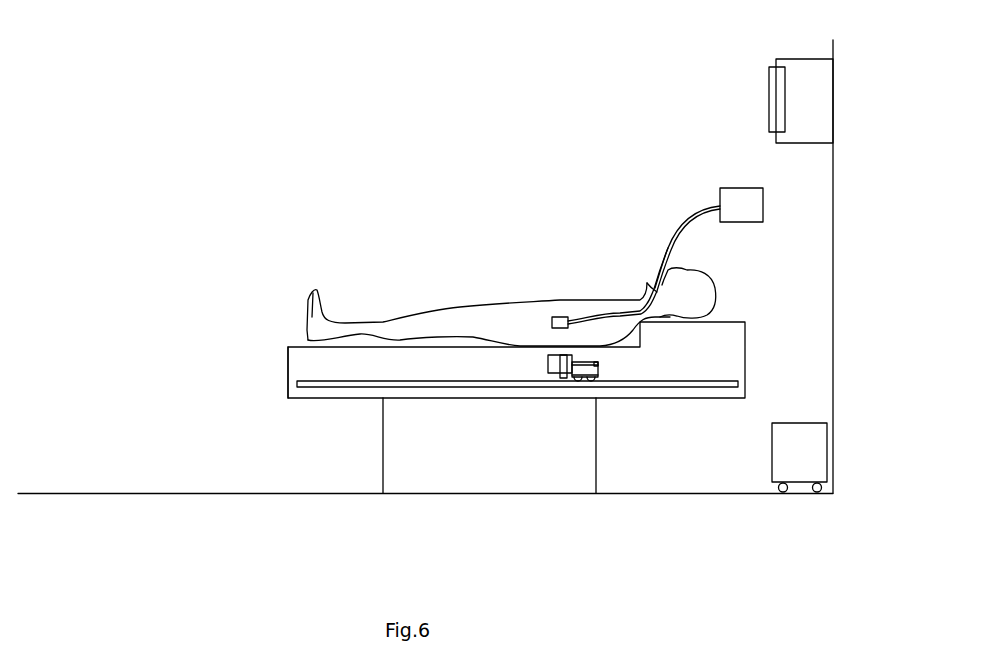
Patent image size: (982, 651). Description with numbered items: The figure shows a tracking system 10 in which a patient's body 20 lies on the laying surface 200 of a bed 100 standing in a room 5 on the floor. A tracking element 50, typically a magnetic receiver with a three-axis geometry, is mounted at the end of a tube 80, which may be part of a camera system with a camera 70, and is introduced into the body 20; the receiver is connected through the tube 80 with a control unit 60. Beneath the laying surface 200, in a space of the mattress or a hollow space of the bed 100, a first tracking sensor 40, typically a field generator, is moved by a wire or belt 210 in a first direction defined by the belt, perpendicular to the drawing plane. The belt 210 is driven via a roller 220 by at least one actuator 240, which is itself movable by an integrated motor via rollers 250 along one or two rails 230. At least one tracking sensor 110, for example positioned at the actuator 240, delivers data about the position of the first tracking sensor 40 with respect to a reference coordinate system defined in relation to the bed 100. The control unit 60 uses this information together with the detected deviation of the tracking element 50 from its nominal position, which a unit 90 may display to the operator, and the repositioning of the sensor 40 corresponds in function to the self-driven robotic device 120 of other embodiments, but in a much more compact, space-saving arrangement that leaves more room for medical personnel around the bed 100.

The tracking system 10 is at (80, 46).
The room 5 is at (243, 496).
The body 20 is at (308, 300).
The tracking element 50 is at (553, 318).
The laying surface 200 is at (296, 347).
The bed 100 is at (738, 345).
The rails 230 is at (446, 388).
The first tracking sensor 40 is at (552, 362).
The roller 220 is at (566, 383).
The wire or belt 210 is at (578, 383).
The actuator 240 is at (588, 383).
The rollers 250 is at (597, 383).
The tracking sensor 110 is at (607, 383).
The control unit 60 is at (808, 440).
The camera 70 is at (740, 188).
The tube 80 is at (665, 257).
The self-driven robotic device 120 is at (645, 232).
The unit 90 is at (773, 95).